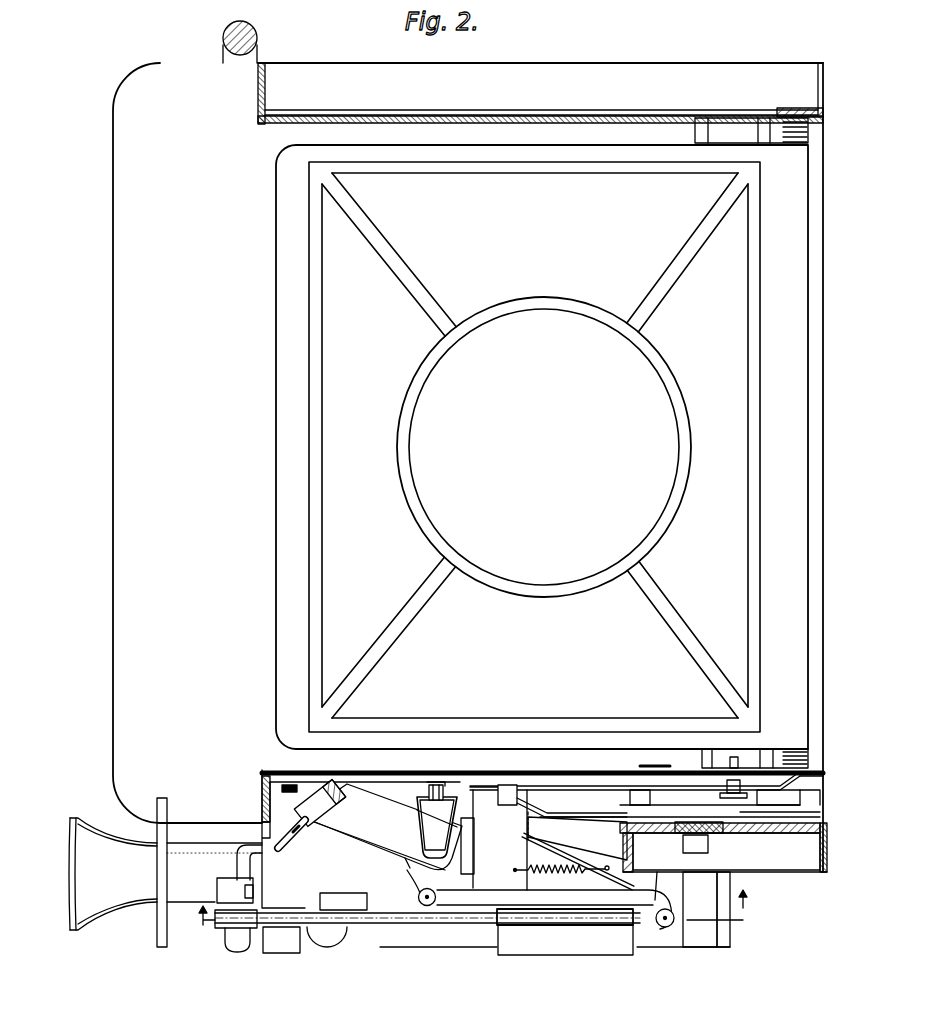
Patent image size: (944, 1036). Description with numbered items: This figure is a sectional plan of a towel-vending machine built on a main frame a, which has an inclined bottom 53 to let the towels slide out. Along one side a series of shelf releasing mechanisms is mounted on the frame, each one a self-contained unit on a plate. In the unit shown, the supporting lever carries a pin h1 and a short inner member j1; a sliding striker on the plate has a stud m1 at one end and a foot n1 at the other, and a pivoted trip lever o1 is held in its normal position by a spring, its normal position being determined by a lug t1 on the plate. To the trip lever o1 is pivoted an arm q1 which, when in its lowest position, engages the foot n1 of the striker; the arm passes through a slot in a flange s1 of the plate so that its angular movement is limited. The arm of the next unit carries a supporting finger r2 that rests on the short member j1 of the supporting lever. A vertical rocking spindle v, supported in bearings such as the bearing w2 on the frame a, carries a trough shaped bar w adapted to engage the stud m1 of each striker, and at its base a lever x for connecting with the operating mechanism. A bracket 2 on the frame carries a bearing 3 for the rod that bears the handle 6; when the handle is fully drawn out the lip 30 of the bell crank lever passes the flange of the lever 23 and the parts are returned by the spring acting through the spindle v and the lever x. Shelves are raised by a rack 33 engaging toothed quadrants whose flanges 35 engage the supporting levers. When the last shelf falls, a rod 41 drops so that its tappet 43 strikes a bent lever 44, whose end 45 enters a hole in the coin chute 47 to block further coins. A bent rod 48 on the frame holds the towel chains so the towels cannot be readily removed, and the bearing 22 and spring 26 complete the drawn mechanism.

The bracket 2 is at (468, 911).
The bearing 3 is at (180, 855).
The handle 6 is at (115, 885).
The shaft bearing 22 is at (327, 940).
The lever 23 is at (622, 872).
The spring 26 is at (575, 873).
The lip of bell crank lever 30 is at (526, 823).
The rack 33 is at (712, 840).
The flange 35 is at (760, 815).
The rod 41 is at (381, 827).
The tappet 43 is at (289, 837).
The bent lever 44 is at (272, 850).
The end of bent lever 45 is at (235, 935).
The chute 47 is at (252, 935).
The bent rod 48 is at (250, 40).
The inclined bottom 53 is at (468, 467).
The main frame a is at (790, 112).
The trough shaped bar w is at (418, 797).
The bearing w2 is at (353, 827).
The vertical rocking spindle v is at (437, 798).
The stud m1 is at (443, 800).
The trip lever o1 is at (503, 785).
The lug t1 is at (523, 785).
The arm q1 is at (573, 787).
The flange s1 is at (600, 788).
The supporting finger r2 is at (632, 788).
The foot n1 is at (680, 785).
The pin h1 is at (728, 762).
The lever x is at (418, 905).
The short inner member j1 is at (722, 833).